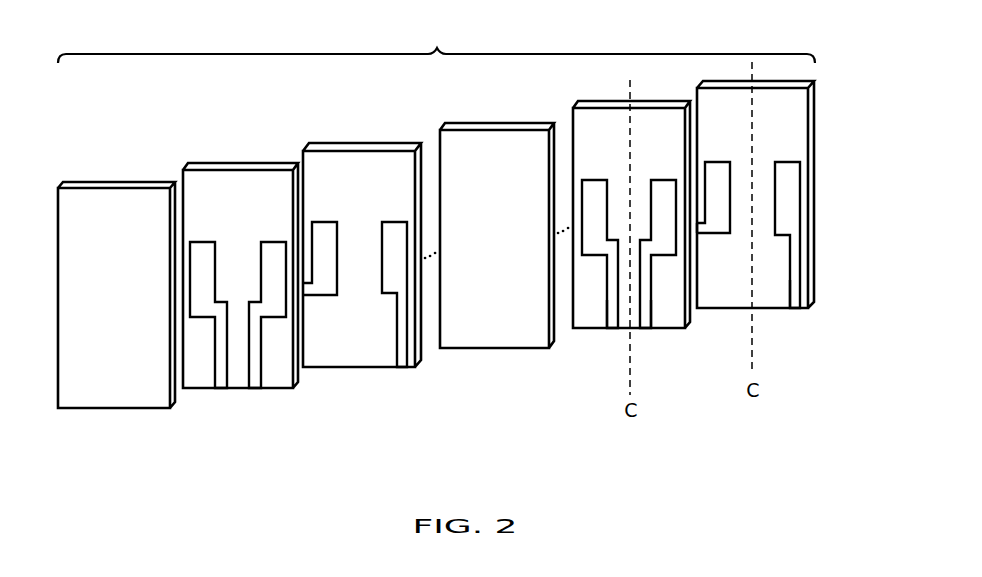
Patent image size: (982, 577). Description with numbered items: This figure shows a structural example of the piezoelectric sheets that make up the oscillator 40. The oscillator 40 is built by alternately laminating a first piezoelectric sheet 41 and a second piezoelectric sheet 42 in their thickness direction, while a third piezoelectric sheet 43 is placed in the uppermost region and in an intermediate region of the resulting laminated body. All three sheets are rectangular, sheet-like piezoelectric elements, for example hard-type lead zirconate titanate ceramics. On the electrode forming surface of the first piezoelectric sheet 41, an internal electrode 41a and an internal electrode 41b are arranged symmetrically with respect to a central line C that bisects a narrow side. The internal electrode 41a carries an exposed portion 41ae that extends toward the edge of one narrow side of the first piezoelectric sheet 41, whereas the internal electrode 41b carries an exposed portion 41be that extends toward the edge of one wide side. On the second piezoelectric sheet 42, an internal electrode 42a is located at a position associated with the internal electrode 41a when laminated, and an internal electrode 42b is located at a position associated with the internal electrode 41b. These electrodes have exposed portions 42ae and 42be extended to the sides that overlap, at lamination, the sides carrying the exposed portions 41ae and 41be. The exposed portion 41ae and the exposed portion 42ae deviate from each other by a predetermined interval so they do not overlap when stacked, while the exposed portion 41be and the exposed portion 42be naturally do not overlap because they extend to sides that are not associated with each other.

The oscillator 40 is at (450, 41).
The first piezoelectric sheet 41 is at (371, 376).
The internal electrode 41a is at (787, 193).
The exposed portion 41ae is at (797, 298).
The internal electrode 41b is at (720, 168).
The exposed portion 41be is at (702, 228).
The second piezoelectric sheet 42 is at (239, 397).
The internal electrode 42a is at (662, 188).
The exposed portion 42ae is at (647, 316).
The internal electrode 42b is at (597, 188).
The exposed portion 42be is at (614, 314).
The third piezoelectric sheet 43 is at (135, 417).